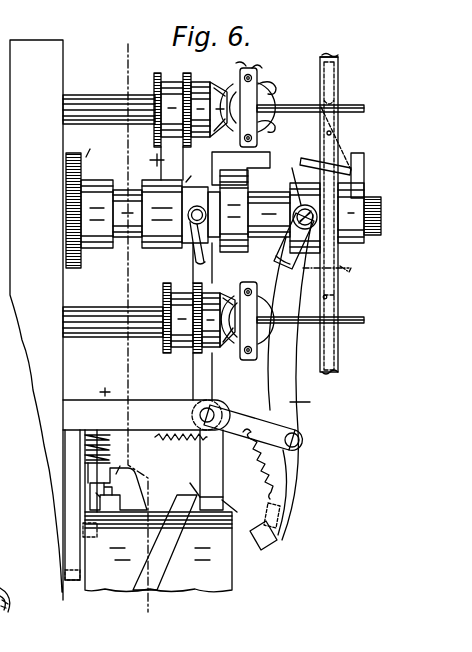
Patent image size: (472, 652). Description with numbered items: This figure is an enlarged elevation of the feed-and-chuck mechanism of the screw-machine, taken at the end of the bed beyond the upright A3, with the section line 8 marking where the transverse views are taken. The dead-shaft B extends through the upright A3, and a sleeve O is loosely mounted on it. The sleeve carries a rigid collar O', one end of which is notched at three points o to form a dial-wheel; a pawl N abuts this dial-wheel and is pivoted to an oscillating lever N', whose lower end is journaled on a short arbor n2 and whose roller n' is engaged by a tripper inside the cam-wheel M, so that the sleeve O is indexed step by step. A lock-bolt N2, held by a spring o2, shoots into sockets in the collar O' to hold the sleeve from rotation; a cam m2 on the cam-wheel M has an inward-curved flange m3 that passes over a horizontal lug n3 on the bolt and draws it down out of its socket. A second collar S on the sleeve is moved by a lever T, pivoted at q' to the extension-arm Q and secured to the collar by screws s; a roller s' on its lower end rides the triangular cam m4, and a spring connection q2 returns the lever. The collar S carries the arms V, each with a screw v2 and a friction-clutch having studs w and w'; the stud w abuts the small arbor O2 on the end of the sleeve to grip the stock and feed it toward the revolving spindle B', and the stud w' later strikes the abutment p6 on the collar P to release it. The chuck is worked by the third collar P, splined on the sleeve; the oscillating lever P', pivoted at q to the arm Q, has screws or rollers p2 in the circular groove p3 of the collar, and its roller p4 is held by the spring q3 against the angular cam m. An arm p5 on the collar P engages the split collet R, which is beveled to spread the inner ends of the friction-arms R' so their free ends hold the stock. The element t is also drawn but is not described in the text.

The upright A3 is at (36, 320).
The section line 8 is at (137, 336).
The revolving spindle B' is at (113, 220).
The pawl N is at (194, 207).
The oscillating lever P' is at (192, 328).
The split collet R is at (225, 217).
The oscillating lever N' is at (163, 234).
The pin t is at (238, 58).
The screw v2 is at (350, 376).
The friction-arm R' is at (277, 105).
The arm V is at (340, 88).
The stud w' is at (310, 140).
The stud w is at (311, 294).
The arbor O2 is at (364, 156).
The dead-shaft B is at (384, 211).
The collar O' is at (89, 210).
The notch o is at (89, 147).
The collar P is at (147, 226).
The arm p5 is at (151, 158).
The circular groove p3 is at (194, 171).
The screw or roller p2 is at (207, 252).
The abutment p6 is at (268, 158).
The sleeve O is at (270, 211).
The collar S is at (330, 246).
The screw s is at (292, 180).
The lever T is at (290, 401).
The extension-arm Q is at (146, 415).
The pivot q is at (216, 408).
The pivot q' is at (264, 427).
The spring q3 is at (157, 441).
The spring connection q2 is at (254, 458).
The spring o2 is at (88, 460).
The cam m2 is at (130, 485).
The flange m3 is at (122, 464).
The horizontal lug n3 is at (91, 500).
The roller n' is at (82, 505).
The short shaft or arbor n2 is at (66, 574).
The lock-bolt N2 is at (113, 392).
The cam-wheel M is at (226, 575).
The angular cam m is at (165, 569).
The triangular-shaped cam m4 is at (239, 502).
The roller p4 is at (190, 484).
The roller s' is at (275, 535).